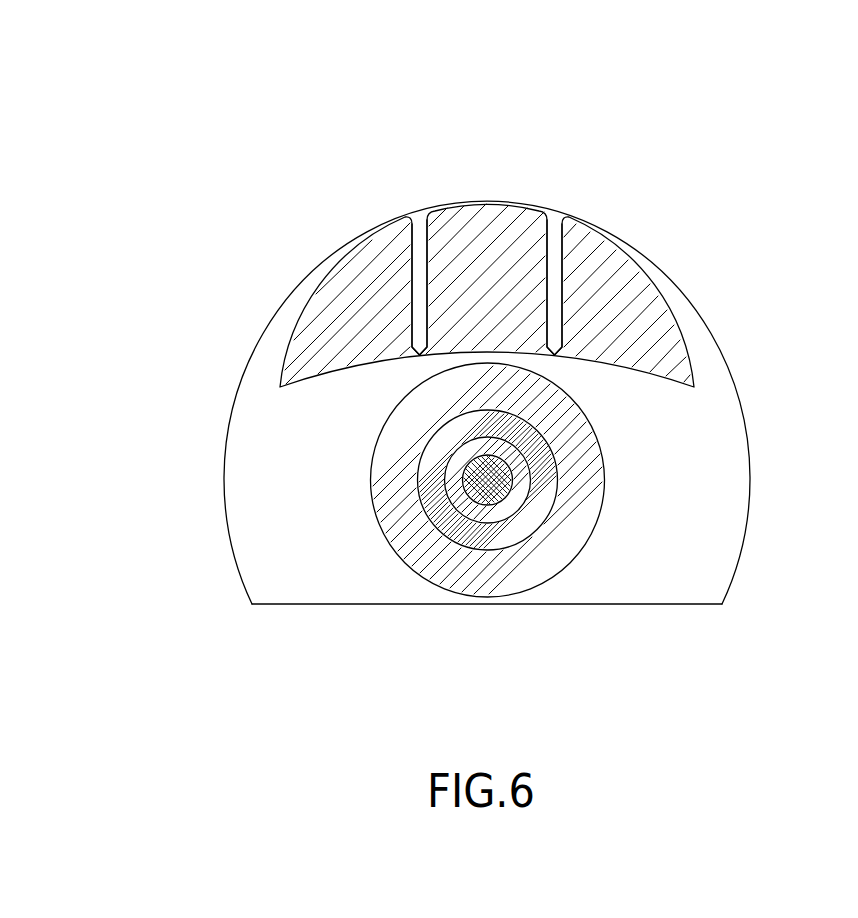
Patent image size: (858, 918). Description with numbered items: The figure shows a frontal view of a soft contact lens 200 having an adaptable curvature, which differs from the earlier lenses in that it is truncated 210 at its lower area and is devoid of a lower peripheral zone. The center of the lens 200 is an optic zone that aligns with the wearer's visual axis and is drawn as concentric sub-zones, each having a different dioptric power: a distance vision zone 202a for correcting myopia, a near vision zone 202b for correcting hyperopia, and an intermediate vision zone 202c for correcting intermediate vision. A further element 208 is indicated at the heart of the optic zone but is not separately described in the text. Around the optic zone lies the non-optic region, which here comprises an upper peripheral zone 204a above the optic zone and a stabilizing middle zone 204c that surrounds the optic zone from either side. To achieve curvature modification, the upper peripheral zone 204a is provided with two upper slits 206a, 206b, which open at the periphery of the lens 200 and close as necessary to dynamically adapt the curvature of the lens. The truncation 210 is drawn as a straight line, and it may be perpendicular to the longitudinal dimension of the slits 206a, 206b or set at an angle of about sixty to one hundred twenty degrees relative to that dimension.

The soft contact lens 200 is at (258, 95).
The distance vision zone 202a is at (527, 429).
The near vision zone 202b is at (593, 523).
The intermediate vision zone 202c is at (526, 487).
The upper peripheral zone 204a is at (345, 332).
The stabilizing middle zone 204c is at (250, 438).
The upper slit 206a is at (418, 232).
The upper slit 206b is at (557, 230).
The central core 208 is at (503, 472).
The truncation 210 is at (498, 604).